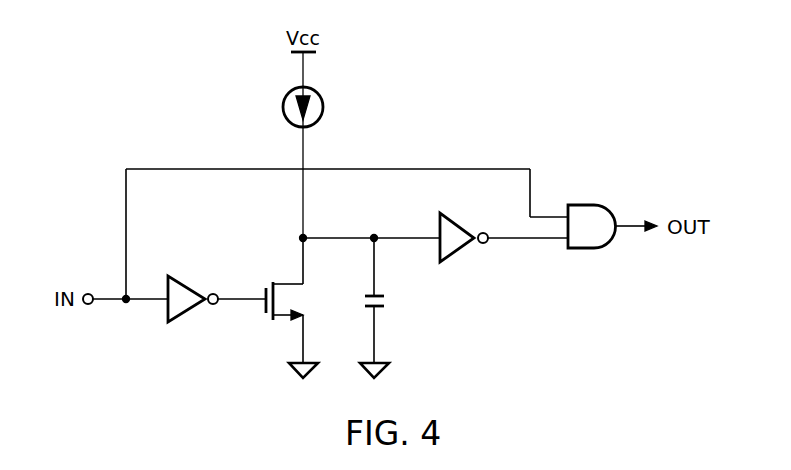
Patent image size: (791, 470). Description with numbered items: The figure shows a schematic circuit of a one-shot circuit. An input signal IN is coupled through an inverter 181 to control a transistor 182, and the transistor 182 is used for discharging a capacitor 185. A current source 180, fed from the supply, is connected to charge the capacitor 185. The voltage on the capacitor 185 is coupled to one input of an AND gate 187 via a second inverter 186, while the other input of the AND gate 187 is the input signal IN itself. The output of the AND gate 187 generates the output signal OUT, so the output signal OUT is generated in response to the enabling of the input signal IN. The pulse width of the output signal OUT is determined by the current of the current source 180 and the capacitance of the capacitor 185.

The current source 180 is at (280, 107).
The inverter 181 is at (217, 290).
The transistor 182 is at (305, 308).
The capacitor 185 is at (395, 308).
The inverter 186 is at (504, 228).
The AND gate 187 is at (612, 213).